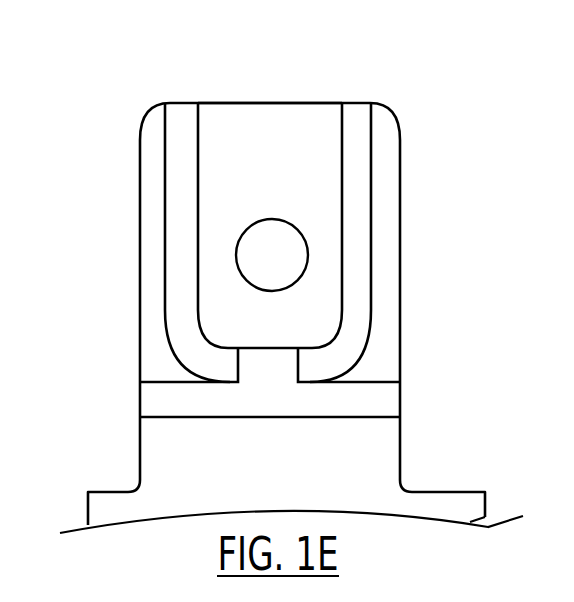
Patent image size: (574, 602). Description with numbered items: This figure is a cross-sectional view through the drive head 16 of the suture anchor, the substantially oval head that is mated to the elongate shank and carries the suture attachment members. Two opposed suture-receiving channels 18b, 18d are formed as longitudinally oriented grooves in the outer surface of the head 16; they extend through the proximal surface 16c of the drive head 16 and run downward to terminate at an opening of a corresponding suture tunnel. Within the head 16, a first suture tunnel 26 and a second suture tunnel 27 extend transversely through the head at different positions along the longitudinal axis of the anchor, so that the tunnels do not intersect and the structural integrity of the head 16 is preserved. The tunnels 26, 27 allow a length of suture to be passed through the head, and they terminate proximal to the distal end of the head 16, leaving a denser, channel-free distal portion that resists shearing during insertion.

The drive head 16 is at (284, 173).
The proximal surface of the drive head 16c is at (272, 101).
The suture-receiving channel 18b is at (182, 121).
The suture-receiving channel 18d is at (358, 121).
The first suture tunnel 26 is at (284, 268).
The second suture tunnel 27 is at (284, 403).